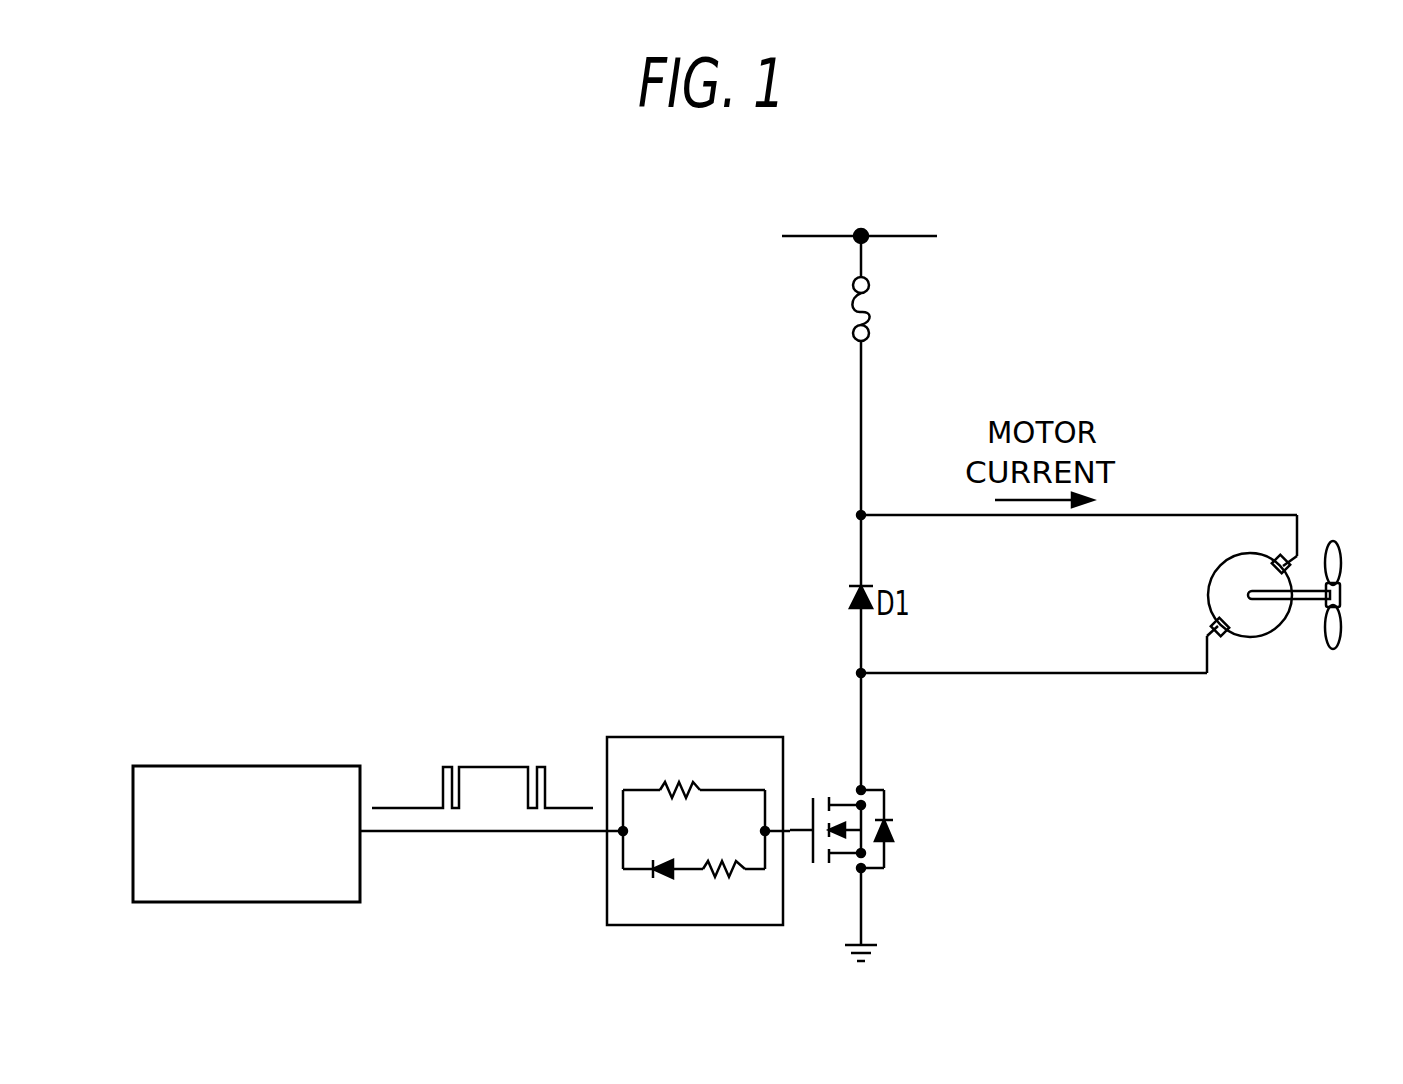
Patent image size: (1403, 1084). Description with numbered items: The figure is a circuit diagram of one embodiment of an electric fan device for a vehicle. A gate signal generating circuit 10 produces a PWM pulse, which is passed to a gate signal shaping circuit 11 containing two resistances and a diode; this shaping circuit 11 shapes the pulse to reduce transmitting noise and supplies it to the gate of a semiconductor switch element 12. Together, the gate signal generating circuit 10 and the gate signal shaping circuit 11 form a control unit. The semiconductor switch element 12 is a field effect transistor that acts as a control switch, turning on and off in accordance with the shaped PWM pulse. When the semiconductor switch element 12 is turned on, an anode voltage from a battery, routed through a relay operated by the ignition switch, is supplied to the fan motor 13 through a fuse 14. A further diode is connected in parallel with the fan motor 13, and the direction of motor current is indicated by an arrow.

The gate signal generating circuit 10 is at (253, 766).
The gate signal shaping circuit 11 is at (697, 737).
The semiconductor switch element 12 is at (900, 825).
The fan motor 13 is at (1338, 548).
The fuse 14 is at (852, 311).